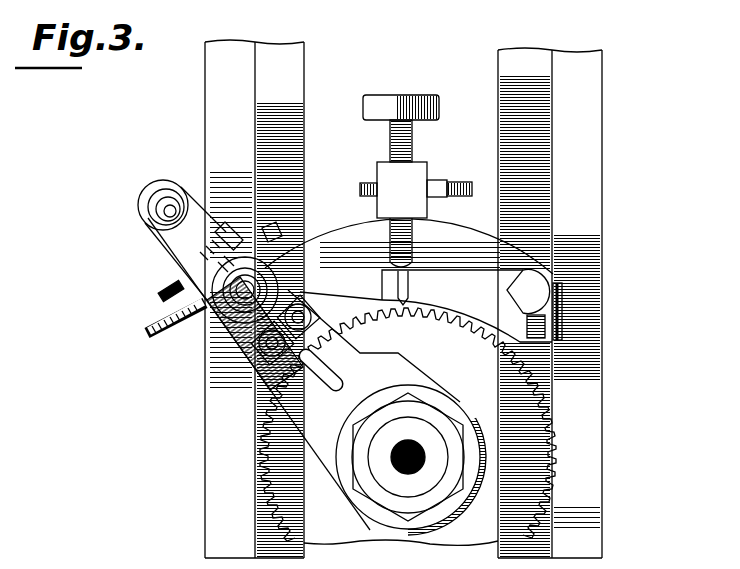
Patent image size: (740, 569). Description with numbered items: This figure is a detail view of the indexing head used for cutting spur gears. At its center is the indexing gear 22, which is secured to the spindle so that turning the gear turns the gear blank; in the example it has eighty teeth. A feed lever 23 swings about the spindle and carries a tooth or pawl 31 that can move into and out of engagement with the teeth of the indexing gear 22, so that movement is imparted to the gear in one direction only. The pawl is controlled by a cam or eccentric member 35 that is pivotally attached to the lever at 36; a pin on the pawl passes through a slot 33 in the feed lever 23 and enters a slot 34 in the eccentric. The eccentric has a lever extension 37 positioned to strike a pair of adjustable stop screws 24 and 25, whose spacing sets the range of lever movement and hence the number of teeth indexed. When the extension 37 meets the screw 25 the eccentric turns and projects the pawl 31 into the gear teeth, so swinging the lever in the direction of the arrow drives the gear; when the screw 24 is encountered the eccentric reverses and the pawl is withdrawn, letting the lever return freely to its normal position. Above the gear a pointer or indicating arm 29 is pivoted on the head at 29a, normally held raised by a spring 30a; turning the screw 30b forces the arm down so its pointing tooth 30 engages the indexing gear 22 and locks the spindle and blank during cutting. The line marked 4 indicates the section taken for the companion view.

The section line 4- 4 is at (163, 205).
The indexing gear 22 is at (408, 424).
The feed lever 23 is at (304, 374).
The stop screw 24 is at (377, 186).
The stop screw 25 is at (167, 307).
The pointer or indicating arm 29 is at (409, 280).
The pivot of the lever 29 29a is at (528, 298).
The pointing tooth 30 is at (415, 288).
The spring 30a is at (543, 327).
The screw 30b is at (402, 149).
The pawl 31 is at (307, 352).
The slot in the feed lever 33 is at (300, 297).
The slot in the cam 34 is at (235, 347).
The cam or eccentric member 35 is at (215, 324).
The pivot of the eccentric 36 is at (247, 289).
The lever extension 37 is at (222, 233).